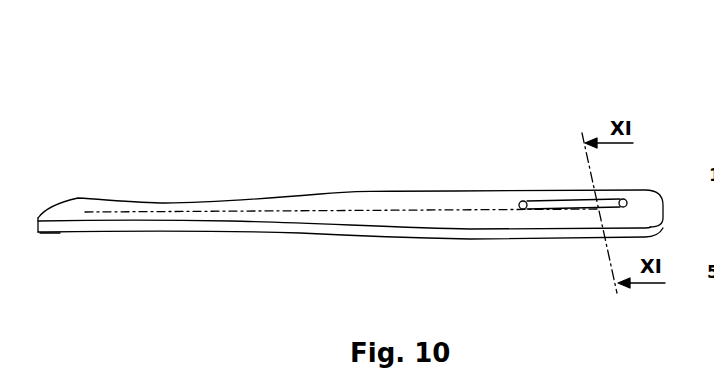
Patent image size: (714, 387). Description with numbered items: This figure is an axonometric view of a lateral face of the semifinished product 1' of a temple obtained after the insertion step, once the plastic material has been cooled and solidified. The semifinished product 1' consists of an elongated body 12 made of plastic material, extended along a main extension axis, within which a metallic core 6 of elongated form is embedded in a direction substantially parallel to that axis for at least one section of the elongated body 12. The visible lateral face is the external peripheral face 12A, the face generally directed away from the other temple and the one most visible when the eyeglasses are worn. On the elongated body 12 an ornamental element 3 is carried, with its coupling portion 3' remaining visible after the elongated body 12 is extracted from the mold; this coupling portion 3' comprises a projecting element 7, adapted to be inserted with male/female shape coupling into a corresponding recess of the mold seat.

The semifinished product 1' is at (350, 149).
The elongated body 12 is at (455, 200).
The external peripheral face 12A is at (387, 198).
The metallic core 6 is at (153, 211).
The ornamental element 3 is at (573, 275).
The coupling portion 3' is at (520, 164).
The projecting element 7 is at (528, 211).